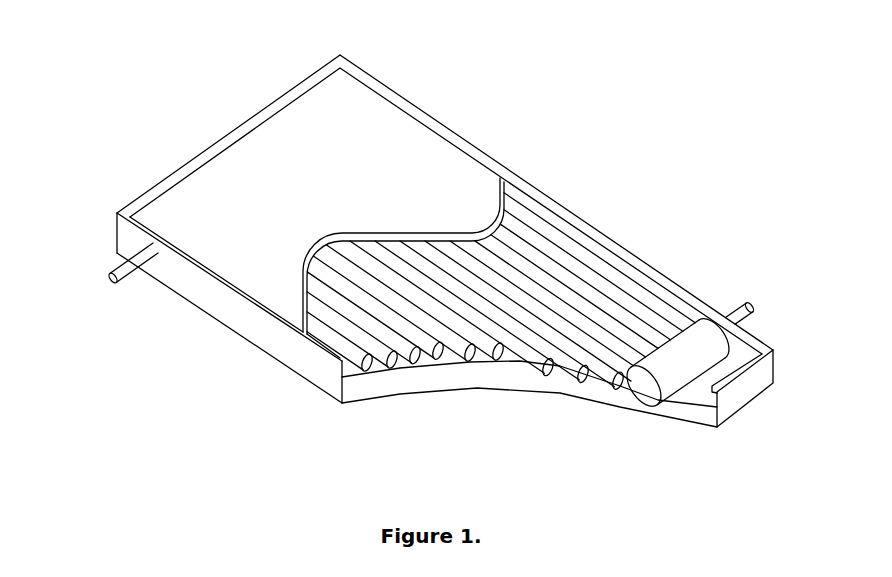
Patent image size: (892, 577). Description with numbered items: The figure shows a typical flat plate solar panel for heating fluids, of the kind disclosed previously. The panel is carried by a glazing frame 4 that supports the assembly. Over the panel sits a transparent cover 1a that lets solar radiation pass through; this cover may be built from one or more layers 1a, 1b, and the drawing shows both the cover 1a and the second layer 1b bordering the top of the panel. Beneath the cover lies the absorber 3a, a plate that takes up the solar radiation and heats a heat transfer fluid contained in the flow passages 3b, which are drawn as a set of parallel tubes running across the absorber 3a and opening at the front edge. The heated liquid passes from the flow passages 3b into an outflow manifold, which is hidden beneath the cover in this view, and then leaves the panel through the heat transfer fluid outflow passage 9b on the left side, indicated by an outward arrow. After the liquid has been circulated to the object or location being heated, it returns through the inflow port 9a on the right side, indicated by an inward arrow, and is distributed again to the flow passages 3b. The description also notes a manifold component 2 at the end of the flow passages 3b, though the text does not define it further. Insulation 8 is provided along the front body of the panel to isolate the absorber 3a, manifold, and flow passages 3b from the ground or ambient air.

The transparent cover 1a is at (342, 108).
The cover layer 1b is at (445, 138).
The manifold cylinder 2 is at (677, 378).
The absorber 3a is at (450, 355).
The flow passages 3b is at (510, 337).
The glazing frame 4 is at (745, 395).
The insulation 8 is at (377, 393).
The inflow port 9a is at (771, 289).
The heat transfer fluid outflow passage 9b is at (103, 287).